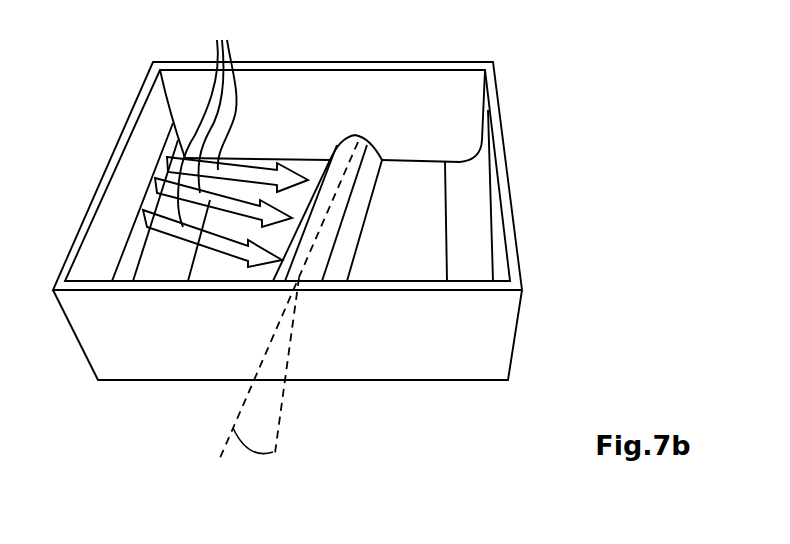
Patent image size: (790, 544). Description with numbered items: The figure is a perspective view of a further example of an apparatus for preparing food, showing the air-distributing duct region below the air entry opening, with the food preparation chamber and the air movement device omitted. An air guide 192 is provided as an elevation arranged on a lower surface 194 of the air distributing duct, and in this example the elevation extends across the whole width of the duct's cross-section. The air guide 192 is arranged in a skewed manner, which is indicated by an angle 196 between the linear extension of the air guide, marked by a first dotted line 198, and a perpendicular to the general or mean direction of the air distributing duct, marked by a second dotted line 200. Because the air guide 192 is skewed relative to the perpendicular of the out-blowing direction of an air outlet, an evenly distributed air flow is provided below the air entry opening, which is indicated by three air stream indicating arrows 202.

The air guide 192 is at (358, 137).
The lower surface 194 is at (226, 265).
The angle 196 is at (275, 453).
The first dotted line 198 is at (237, 428).
The second dotted line 200 is at (280, 407).
The air stream indicating arrows 202 is at (209, 120).